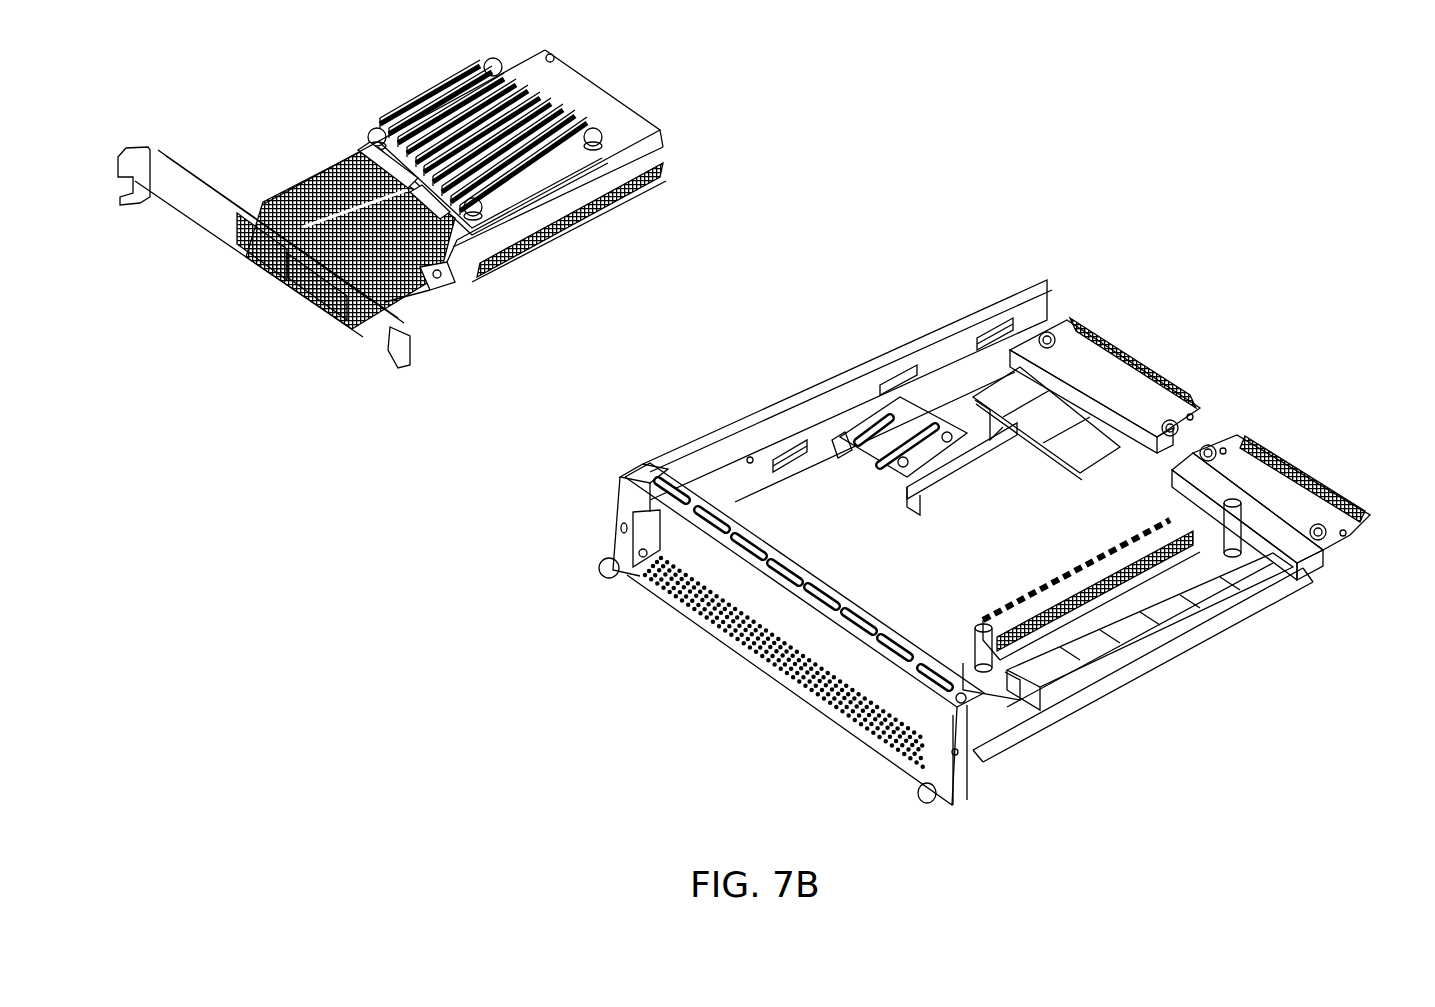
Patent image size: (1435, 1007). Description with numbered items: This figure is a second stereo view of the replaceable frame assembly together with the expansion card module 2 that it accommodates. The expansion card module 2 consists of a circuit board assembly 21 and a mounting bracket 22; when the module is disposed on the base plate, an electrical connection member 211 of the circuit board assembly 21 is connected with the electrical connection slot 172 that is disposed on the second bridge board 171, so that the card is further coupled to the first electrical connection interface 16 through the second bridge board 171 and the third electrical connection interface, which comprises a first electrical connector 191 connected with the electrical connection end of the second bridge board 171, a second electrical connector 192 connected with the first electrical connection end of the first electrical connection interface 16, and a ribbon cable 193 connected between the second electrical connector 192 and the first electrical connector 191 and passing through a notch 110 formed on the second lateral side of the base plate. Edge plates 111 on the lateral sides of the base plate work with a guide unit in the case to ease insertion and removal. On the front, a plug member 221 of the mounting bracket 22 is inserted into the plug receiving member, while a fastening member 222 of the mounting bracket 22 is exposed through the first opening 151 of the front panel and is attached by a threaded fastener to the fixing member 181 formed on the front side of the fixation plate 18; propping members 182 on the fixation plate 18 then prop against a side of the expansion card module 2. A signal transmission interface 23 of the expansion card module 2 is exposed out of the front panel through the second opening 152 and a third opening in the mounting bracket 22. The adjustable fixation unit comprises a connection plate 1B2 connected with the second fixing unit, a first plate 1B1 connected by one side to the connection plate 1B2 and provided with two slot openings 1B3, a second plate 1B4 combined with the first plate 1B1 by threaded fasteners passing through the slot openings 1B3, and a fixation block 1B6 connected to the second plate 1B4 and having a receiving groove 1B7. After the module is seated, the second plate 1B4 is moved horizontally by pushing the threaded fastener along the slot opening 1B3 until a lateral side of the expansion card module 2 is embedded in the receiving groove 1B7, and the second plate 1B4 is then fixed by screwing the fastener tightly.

The expansion card module 2 is at (347, 128).
The circuit board assembly 21 is at (637, 127).
The electrical connection member 211 is at (667, 172).
The mounting bracket 22 is at (215, 185).
The plug member 221 is at (398, 362).
The fastening member 222 is at (136, 150).
The signal transmission interface 23 is at (302, 292).
The fixation plate 18 is at (1030, 298).
The propping members 182 is at (1010, 312).
The second opening 152 is at (822, 646).
The first opening 151 is at (620, 490).
The fixing member 181 is at (650, 508).
The notch 110 is at (1037, 703).
The edge plate 111 is at (1300, 580).
The ribbon cable 193 is at (1080, 450).
The first electrical connector 191 is at (1235, 575).
The second electrical connector 192 is at (1060, 366).
The first electrical connection interface 16 is at (1186, 426).
The electrical connection slot 172 is at (1108, 555).
The second bridge board 171 is at (993, 672).
The first plate 1B1 is at (884, 474).
The connection plate 1B2 is at (840, 440).
The slot openings 1B3 is at (882, 403).
The second plate 1B4 is at (977, 448).
The fixation block 1B6 is at (1003, 420).
The receiving groove 1B7 is at (920, 504).